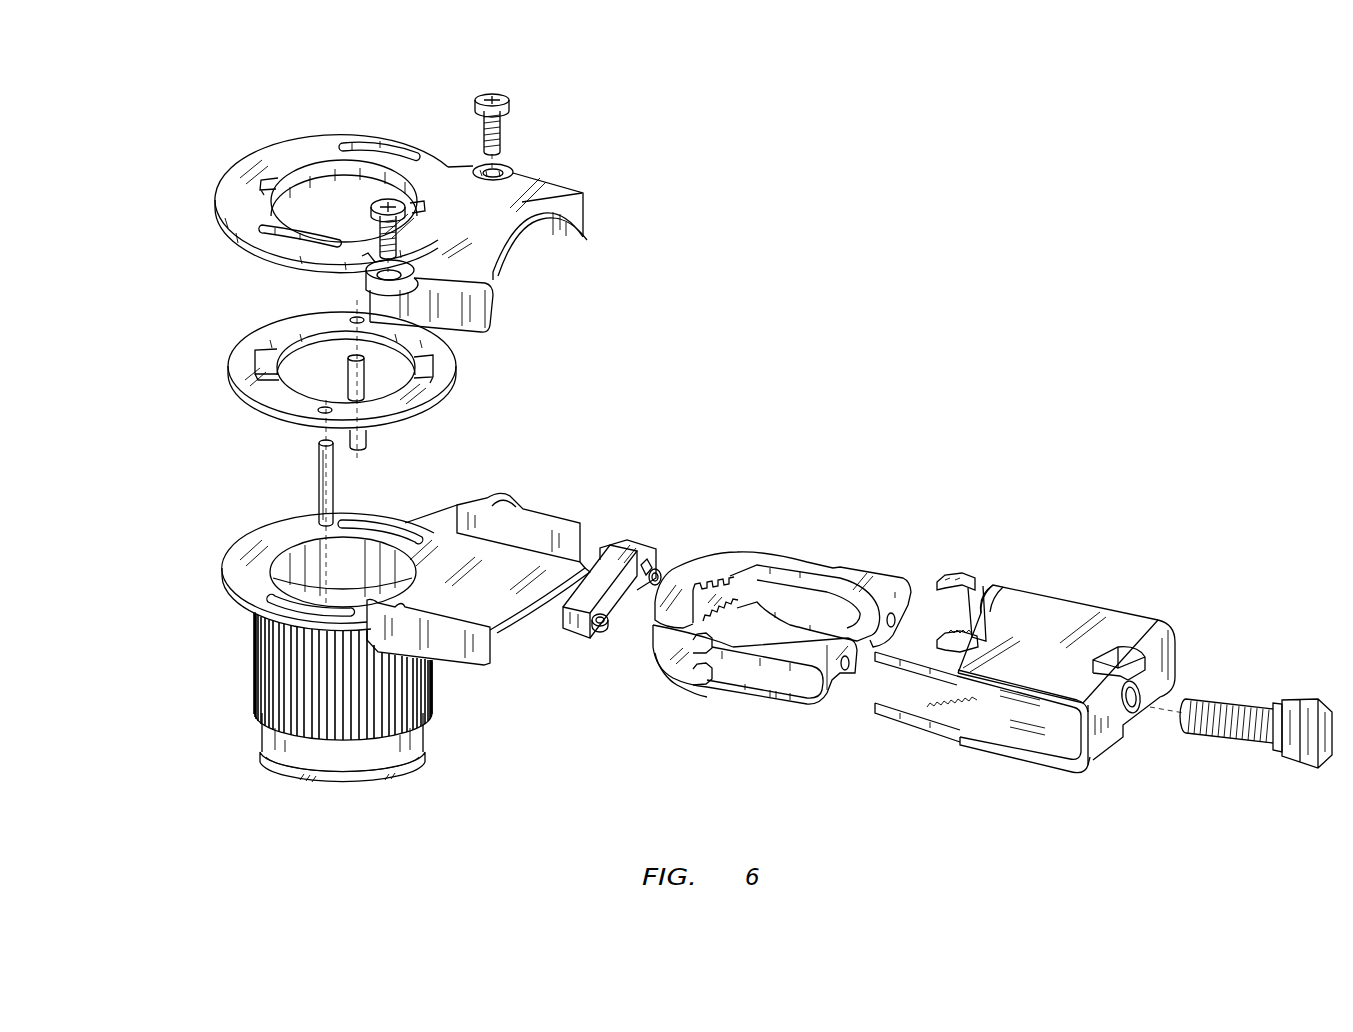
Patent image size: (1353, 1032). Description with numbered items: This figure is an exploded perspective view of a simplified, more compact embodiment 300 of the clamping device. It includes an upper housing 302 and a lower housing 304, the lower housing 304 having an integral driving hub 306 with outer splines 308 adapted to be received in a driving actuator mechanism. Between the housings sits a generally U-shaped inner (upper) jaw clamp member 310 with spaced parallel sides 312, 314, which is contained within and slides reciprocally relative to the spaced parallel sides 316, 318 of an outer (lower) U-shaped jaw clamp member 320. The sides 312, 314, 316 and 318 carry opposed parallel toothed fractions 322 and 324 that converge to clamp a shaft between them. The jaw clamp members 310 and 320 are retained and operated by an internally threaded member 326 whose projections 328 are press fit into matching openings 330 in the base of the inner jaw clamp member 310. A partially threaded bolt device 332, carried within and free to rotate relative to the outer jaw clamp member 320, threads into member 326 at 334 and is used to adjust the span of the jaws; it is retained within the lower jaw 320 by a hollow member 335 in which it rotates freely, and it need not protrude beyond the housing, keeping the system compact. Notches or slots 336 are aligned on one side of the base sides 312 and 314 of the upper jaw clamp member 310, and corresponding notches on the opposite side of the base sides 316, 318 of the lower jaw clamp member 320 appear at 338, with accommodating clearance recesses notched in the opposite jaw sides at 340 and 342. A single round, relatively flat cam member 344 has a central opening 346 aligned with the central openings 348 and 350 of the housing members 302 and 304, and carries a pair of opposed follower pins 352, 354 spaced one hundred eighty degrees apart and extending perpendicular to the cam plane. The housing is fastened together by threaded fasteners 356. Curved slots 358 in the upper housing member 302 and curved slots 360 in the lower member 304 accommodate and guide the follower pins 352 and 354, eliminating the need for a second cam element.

The embodiment 300 is at (660, 387).
The upper housing 302 is at (558, 177).
The lower housing 304 is at (530, 507).
The driving hub 306 is at (417, 737).
The outer splines 308 is at (420, 707).
The inner jaw clamp member 310 is at (775, 615).
The spaced parallel side 312 is at (790, 687).
The spaced parallel side 314 is at (740, 640).
The spaced parallel side 316 is at (973, 720).
The spaced parallel side 318 is at (1023, 680).
The outer jaw clamp member 320 is at (1080, 681).
The toothed fraction 322 is at (727, 578).
The toothed fraction 324 is at (993, 605).
The internally threaded member 326 is at (610, 567).
The projections 328 is at (657, 573).
The openings 330 is at (900, 590).
The bolt device 332 is at (1240, 703).
The threaded engagement location 334 is at (645, 570).
The hollow member 335 is at (1133, 667).
The notches or slots 336 is at (700, 680).
The notches or slots 338 is at (985, 637).
The clearance recess 340 is at (803, 557).
The clearance recess 342 is at (887, 707).
The cam member 344 is at (445, 370).
The central opening 346 is at (330, 352).
The central opening 348 is at (313, 180).
The central opening 350 is at (317, 553).
The follower pin 352 is at (333, 485).
The follower pin 354 is at (367, 440).
The threaded fasteners 356 is at (507, 118).
The curved slots 358 is at (373, 140).
The curved slots 360 is at (367, 530).